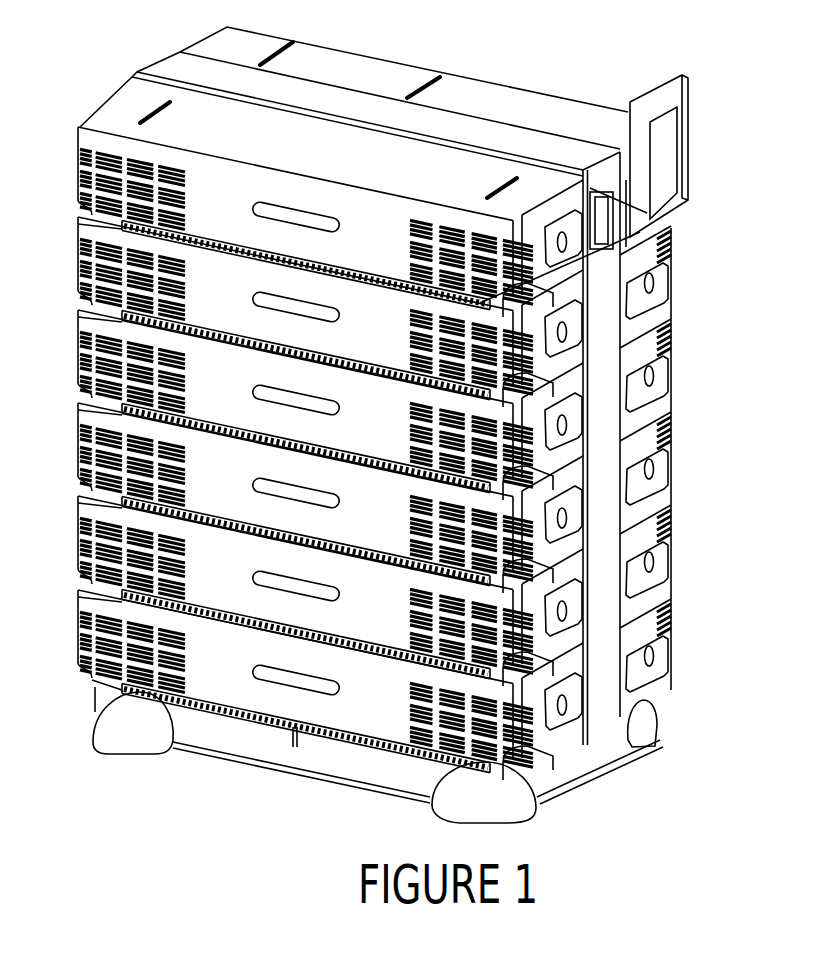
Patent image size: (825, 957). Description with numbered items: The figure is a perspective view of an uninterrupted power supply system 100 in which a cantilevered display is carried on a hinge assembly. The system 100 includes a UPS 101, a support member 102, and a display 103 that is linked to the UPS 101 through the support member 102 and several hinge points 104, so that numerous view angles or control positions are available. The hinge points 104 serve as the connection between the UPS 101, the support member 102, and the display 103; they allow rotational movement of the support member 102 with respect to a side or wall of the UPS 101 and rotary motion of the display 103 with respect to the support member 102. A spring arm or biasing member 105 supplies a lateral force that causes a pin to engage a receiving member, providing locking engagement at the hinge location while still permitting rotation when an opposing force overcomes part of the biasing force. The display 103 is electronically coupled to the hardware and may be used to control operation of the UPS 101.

The uninterrupted power supply system 100 is at (742, 731).
The UPS 101 is at (674, 523).
The support member 102 is at (660, 262).
The display 103 is at (672, 141).
The hinge points 104 is at (634, 170).
The biasing member 105 is at (647, 213).